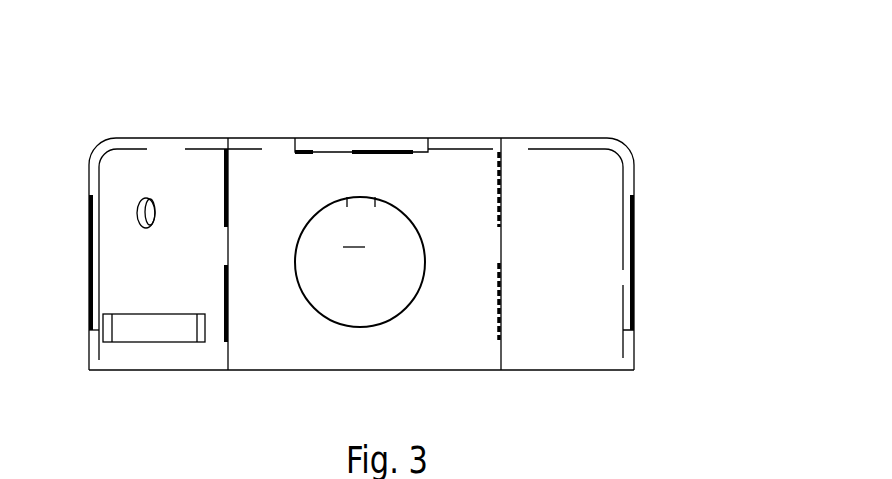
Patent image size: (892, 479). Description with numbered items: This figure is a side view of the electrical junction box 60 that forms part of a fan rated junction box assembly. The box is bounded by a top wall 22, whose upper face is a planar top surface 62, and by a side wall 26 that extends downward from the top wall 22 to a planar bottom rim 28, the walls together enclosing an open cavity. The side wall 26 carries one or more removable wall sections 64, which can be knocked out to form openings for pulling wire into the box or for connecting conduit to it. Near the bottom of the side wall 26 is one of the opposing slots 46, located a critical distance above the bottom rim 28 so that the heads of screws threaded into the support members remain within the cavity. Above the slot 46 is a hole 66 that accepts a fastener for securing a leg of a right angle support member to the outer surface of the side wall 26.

The electrical junction box 60 is at (668, 50).
The top wall 22 is at (499, 138).
The side wall 26 is at (636, 167).
The bottom rim 28 is at (572, 358).
The slot 46 is at (153, 322).
The planar top surface 62 is at (229, 138).
The removable wall section 64 is at (361, 138).
The hole 66 is at (155, 210).